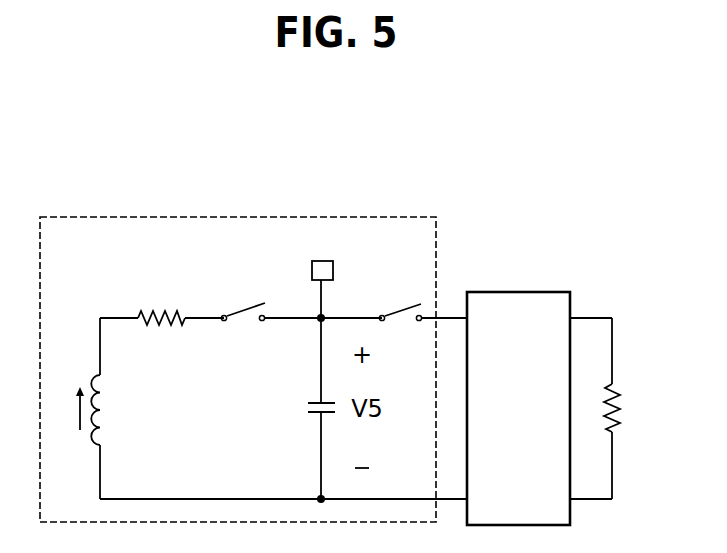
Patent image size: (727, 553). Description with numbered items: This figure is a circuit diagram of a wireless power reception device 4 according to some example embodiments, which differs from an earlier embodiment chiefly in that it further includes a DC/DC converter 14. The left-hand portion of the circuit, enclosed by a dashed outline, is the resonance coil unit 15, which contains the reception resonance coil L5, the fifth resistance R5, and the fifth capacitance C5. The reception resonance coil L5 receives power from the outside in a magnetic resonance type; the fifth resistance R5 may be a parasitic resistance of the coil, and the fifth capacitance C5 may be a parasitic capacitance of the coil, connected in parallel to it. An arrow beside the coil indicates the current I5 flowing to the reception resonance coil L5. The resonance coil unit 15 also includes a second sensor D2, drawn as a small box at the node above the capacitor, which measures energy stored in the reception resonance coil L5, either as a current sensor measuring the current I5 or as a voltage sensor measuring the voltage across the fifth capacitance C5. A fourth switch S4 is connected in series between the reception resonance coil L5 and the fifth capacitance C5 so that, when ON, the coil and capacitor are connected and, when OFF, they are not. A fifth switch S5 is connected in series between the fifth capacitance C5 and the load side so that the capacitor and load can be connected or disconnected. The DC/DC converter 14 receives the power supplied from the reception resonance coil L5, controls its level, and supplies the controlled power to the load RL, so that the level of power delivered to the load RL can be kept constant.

The wireless power reception device 4 is at (405, 109).
The resonance coil unit 15 is at (239, 216).
The DC/DC converter 14 is at (520, 292).
The second sensor D2 is at (331, 259).
The fifth resistance R5 is at (161, 301).
The fourth switch S4 is at (243, 299).
The fifth switch S5 is at (400, 300).
The fifth capacitance C5 is at (304, 409).
The reception resonance coil L5 is at (111, 410).
The current I5 is at (67, 408).
The load RL is at (630, 408).